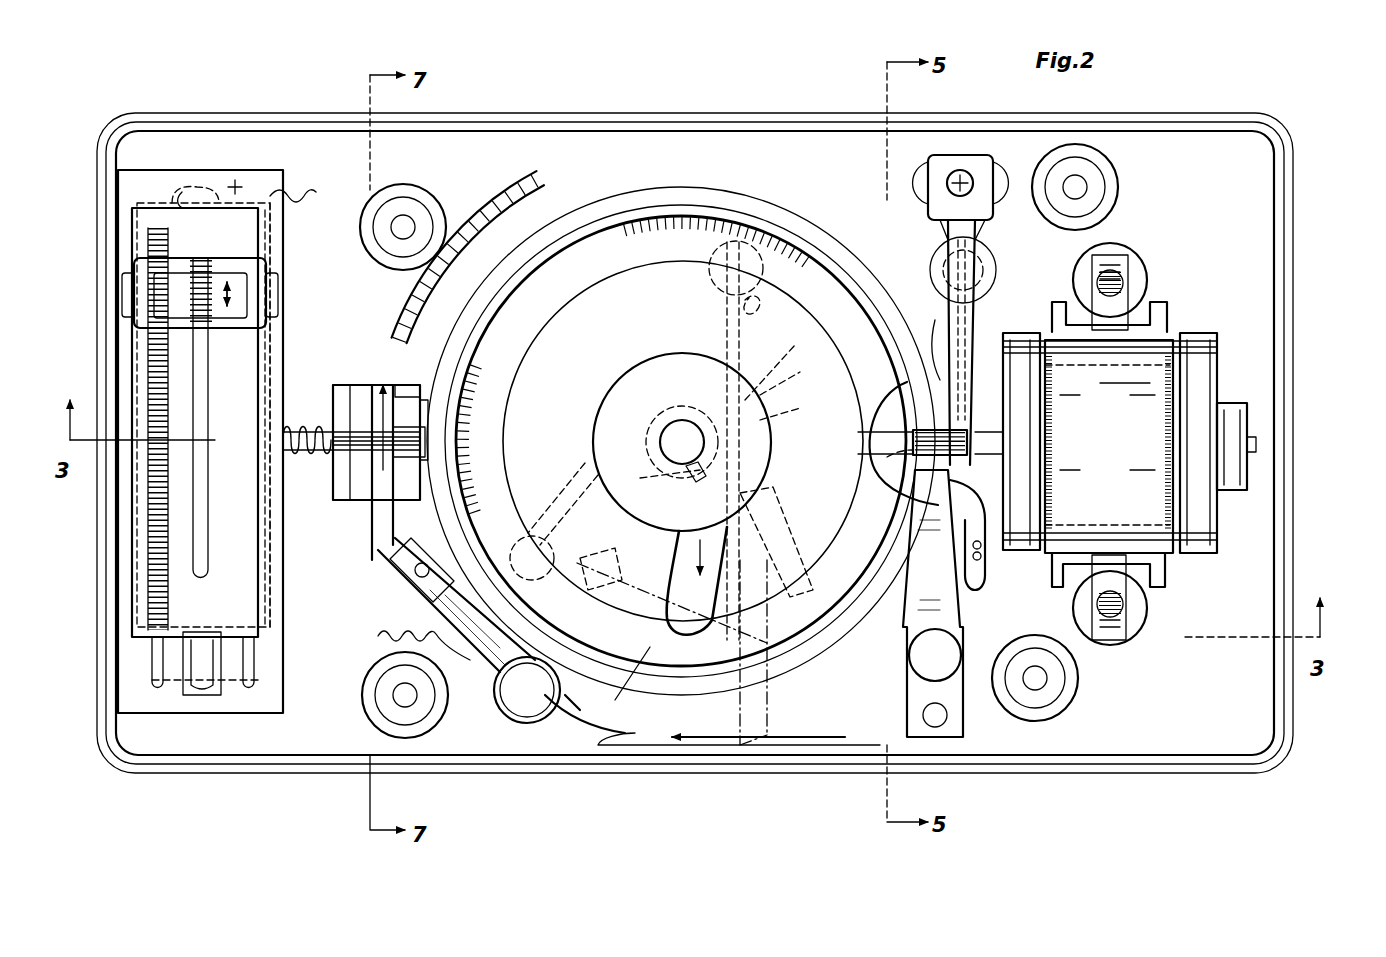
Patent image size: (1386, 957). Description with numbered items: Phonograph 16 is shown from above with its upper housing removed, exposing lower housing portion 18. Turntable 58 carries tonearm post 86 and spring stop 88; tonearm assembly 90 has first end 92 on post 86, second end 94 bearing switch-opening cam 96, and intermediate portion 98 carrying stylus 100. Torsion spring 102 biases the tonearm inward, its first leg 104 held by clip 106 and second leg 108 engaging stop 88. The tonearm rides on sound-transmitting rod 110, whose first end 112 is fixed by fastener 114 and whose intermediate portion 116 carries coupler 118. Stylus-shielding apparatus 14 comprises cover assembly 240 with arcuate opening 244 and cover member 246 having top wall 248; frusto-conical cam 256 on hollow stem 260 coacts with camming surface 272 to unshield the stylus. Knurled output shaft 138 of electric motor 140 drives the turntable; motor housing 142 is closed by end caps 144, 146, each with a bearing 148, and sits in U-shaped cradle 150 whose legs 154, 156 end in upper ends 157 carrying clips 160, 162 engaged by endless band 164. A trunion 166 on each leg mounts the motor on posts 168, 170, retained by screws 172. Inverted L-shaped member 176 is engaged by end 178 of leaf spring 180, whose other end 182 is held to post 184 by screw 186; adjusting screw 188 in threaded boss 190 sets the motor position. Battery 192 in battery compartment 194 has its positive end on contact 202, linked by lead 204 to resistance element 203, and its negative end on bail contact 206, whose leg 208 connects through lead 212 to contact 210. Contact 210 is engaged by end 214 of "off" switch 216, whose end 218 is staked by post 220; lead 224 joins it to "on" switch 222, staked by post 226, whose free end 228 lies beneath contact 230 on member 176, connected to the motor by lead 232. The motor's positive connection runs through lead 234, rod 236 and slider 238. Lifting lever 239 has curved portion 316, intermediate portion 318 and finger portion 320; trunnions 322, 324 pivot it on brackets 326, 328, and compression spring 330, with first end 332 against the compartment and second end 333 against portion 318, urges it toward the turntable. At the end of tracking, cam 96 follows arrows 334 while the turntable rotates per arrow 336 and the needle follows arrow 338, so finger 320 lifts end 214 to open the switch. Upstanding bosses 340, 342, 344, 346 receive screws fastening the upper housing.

The stylus-shielding apparatus 14 is at (766, 356).
The phonograph 16 is at (1270, 112).
The lower housing portion 18 is at (1288, 297).
The turntable 58 is at (771, 192).
The tonearm post 86 is at (516, 540).
The spring stop 88 is at (600, 481).
The tonearm assembly 90 is at (641, 549).
The first end 92 is at (553, 496).
The second end 94 is at (838, 499).
The switch-opening cam 96 is at (836, 562).
The intermediate portion 98 is at (670, 481).
The stylus 100 is at (776, 542).
The torsion spring 102 is at (536, 581).
The first leg 104 is at (592, 588).
The clip 106 is at (595, 614).
The second leg 108 is at (596, 446).
The sound-transmitting rod 110 is at (674, 289).
The first end 112 is at (748, 334).
The fastener 114 is at (740, 262).
The intermediate portion 116 is at (784, 380).
The coupler 118 is at (784, 405).
The output shaft 138 is at (862, 424).
The electric motor 140 is at (1228, 491).
The housing 142 is at (1232, 528).
The front end cap 144 is at (1026, 553).
The rear end cap 146 is at (1250, 386).
The bearing 148 is at (940, 330).
The U-shaped cradle 150 is at (1110, 446).
The upstanding leg 154 is at (1138, 506).
The upstanding leg 156 is at (1118, 336).
The upper end 157 is at (1140, 312).
The clip 160 is at (1072, 300).
The clip 162 is at (1166, 306).
The elastomeric endless band 164 is at (1200, 358).
The trunion 166 is at (1122, 300).
The post 168 is at (1275, 599).
The post 170 is at (1088, 262).
The screw 172 is at (1113, 275).
The inverted L-shaped member 176 is at (976, 451).
The one end 178 is at (881, 351).
The leaf spring 180 is at (945, 356).
The other end 182 is at (1001, 186).
The post 184 is at (936, 163).
The screw 186 is at (968, 176).
The adjusting screw 188 is at (1000, 241).
The internally-threaded boss 190 is at (946, 229).
The battery 192 is at (126, 616).
The battery compartment 194 is at (318, 611).
The contact 202 is at (216, 178).
The resistance element 203 is at (152, 530).
The lead 204 is at (185, 190).
The contact 206 is at (196, 702).
The leg 208 is at (233, 707).
The contact 210 is at (396, 583).
The lead 212 is at (378, 636).
The one end 214 is at (380, 539).
The "off" switch 216 is at (442, 620).
The end 218 is at (506, 722).
The post 220 is at (522, 706).
The "on" switch 222 is at (945, 586).
The lead 224 is at (776, 776).
The post 226 is at (910, 659).
The free end 228 is at (795, 395).
The contact 230 is at (886, 491).
The lead 232 is at (1035, 516).
The lead 234 is at (650, 152).
The rod 236 is at (290, 443).
The slider 238 is at (228, 278).
The lifting lever 239 is at (406, 312).
The cover assembly 240 is at (610, 311).
The arcuate opening 244 is at (617, 691).
The cover member 246 is at (650, 413).
The top wall 248 is at (680, 363).
The frusto-conical cam 256 is at (784, 370).
The hollow stem 260 is at (668, 402).
The camming surface 272 is at (660, 470).
The curved portion 316 is at (506, 208).
The intermediate portion 318 is at (366, 470).
The switch-lifting finger portion 320 is at (374, 515).
The trunnion 322 is at (363, 385).
The trunnion 324 is at (445, 416).
The bracket 326 is at (413, 353).
The bracket 328 is at (473, 373).
The third compression spring 330 is at (323, 392).
The first end 332 is at (290, 422).
The second end 333 is at (378, 453).
The arrows 334 is at (460, 200).
The arrow 336 is at (851, 471).
The arrow 338 is at (760, 597).
The upstanding boss 340 is at (366, 716).
The upstanding boss 342 is at (392, 200).
The upstanding boss 344 is at (1092, 152).
The upstanding boss 346 is at (1076, 681).